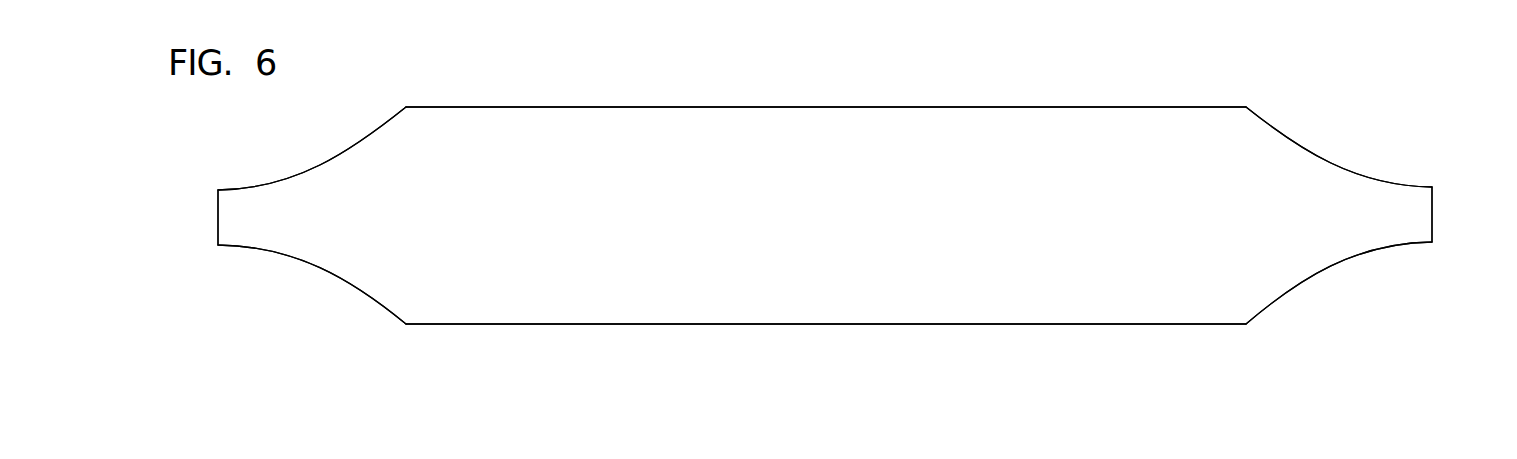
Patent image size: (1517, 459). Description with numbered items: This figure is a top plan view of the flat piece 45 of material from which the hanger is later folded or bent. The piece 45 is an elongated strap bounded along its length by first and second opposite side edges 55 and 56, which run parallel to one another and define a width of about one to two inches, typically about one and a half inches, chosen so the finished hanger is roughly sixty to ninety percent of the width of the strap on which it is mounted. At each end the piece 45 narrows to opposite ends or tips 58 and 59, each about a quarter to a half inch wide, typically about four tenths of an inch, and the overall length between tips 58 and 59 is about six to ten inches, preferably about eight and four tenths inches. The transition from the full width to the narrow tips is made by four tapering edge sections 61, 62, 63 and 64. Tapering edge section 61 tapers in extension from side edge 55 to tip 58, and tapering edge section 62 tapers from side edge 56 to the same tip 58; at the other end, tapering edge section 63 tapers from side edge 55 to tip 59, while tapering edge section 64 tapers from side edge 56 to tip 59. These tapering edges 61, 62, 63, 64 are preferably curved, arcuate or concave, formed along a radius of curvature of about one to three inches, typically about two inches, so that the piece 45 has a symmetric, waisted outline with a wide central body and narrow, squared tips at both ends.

The piece 45 is at (1013, 107).
The first side edge 55 is at (645, 107).
The second side edge 56 is at (660, 324).
The tip 58 is at (218, 213).
The tip 59 is at (1432, 207).
The tapering edge section 61 is at (308, 173).
The tapering edge section 62 is at (315, 267).
The tapering edge section 63 is at (1318, 160).
The tapering edge section 64 is at (1328, 268).